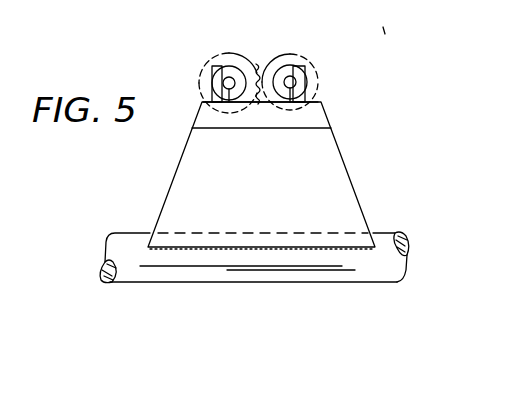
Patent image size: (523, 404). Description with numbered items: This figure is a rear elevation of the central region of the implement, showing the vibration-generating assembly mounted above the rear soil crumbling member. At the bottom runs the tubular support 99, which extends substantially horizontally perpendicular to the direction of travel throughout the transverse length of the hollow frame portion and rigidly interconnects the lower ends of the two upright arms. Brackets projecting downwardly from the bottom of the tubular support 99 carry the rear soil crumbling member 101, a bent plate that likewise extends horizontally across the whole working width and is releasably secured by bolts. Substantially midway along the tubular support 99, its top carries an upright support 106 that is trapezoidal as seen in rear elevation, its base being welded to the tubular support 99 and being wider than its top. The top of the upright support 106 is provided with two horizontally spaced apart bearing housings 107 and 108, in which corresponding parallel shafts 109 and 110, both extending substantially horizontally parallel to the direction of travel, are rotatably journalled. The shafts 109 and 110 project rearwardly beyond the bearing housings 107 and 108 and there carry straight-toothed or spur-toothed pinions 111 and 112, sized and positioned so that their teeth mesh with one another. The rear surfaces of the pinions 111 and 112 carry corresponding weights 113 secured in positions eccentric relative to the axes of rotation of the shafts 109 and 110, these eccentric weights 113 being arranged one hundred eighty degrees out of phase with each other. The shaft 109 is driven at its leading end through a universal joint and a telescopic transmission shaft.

The tubular support 99 is at (127, 238).
The rear soil crumbling member 101 is at (407, 233).
The upright support 106 is at (350, 178).
The bearing housing 107 is at (232, 129).
The bearing housing 108 is at (290, 76).
The shaft 109 is at (233, 79).
The shaft 110 is at (299, 58).
The pinion 111 is at (200, 73).
The pinion 112 is at (318, 88).
The eccentric weight 113 is at (216, 66).